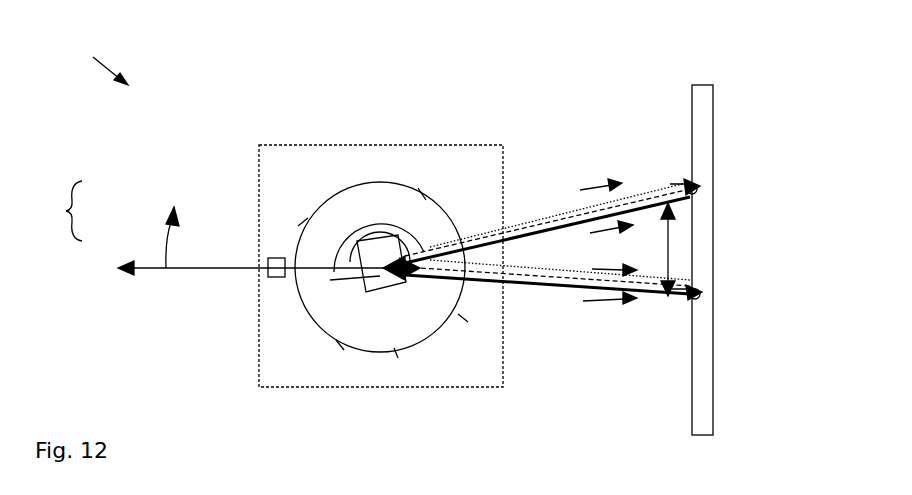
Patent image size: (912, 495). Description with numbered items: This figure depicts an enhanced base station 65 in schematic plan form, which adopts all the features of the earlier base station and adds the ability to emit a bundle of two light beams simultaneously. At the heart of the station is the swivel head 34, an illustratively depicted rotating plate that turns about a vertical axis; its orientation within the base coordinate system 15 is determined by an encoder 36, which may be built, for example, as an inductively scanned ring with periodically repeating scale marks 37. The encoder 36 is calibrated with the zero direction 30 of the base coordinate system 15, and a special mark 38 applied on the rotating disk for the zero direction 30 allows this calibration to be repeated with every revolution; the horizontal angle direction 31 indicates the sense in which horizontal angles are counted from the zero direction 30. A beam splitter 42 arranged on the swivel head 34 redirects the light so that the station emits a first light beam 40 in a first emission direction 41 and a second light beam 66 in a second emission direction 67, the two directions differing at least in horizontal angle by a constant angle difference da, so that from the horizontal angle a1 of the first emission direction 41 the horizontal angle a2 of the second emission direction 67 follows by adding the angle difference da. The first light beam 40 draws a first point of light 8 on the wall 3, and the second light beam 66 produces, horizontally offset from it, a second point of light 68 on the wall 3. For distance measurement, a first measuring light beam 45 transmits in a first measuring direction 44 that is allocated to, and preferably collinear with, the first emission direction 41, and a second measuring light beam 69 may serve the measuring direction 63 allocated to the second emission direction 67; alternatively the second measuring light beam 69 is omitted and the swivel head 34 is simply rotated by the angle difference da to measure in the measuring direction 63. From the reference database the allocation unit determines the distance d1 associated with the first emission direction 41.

The enhanced base station 65 is at (95, 59).
The base coordinate system 15 is at (56, 211).
The horizontal angle direction 31 is at (165, 237).
The zero direction 30 is at (150, 267).
The encoder 36 is at (267, 273).
The beam splitter 42 is at (357, 272).
The swivel head 34 is at (330, 313).
The scale marks 37 is at (345, 337).
The horizontal angle of the first emission direction a1 is at (373, 235).
The horizontal angle of the second emission direction a2 is at (400, 242).
The special mark 38 is at (443, 247).
The light beam 40 is at (520, 230).
The first measuring light beam 45 is at (540, 240).
The first emission direction 41 is at (583, 212).
The first measuring direction 44 is at (607, 187).
The distance associated with the first emission direction d1 is at (653, 183).
The wall 3 is at (698, 152).
The first point of light 8 is at (693, 192).
The angle difference da is at (673, 245).
The second point of light 68 is at (707, 287).
The second light beam 66 is at (508, 283).
The second measuring light beam 69 is at (557, 282).
The second emission direction 67 is at (590, 283).
The measuring direction allocated to the second emission direction 63 is at (605, 277).